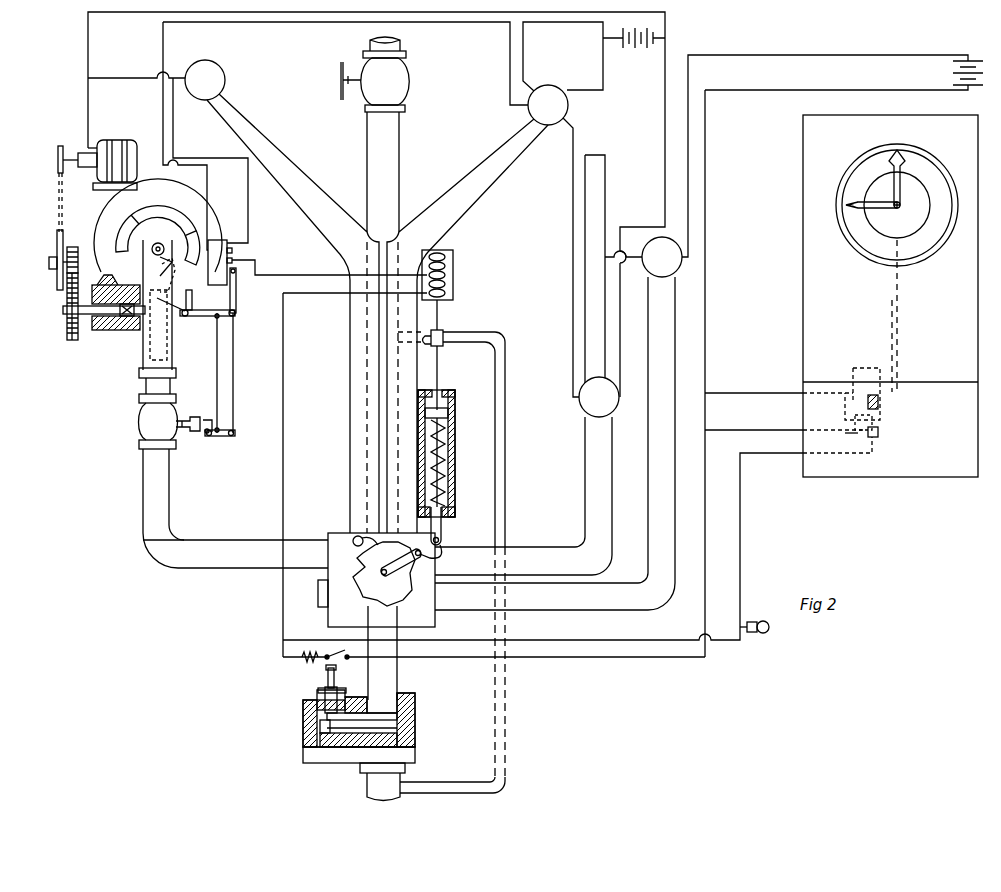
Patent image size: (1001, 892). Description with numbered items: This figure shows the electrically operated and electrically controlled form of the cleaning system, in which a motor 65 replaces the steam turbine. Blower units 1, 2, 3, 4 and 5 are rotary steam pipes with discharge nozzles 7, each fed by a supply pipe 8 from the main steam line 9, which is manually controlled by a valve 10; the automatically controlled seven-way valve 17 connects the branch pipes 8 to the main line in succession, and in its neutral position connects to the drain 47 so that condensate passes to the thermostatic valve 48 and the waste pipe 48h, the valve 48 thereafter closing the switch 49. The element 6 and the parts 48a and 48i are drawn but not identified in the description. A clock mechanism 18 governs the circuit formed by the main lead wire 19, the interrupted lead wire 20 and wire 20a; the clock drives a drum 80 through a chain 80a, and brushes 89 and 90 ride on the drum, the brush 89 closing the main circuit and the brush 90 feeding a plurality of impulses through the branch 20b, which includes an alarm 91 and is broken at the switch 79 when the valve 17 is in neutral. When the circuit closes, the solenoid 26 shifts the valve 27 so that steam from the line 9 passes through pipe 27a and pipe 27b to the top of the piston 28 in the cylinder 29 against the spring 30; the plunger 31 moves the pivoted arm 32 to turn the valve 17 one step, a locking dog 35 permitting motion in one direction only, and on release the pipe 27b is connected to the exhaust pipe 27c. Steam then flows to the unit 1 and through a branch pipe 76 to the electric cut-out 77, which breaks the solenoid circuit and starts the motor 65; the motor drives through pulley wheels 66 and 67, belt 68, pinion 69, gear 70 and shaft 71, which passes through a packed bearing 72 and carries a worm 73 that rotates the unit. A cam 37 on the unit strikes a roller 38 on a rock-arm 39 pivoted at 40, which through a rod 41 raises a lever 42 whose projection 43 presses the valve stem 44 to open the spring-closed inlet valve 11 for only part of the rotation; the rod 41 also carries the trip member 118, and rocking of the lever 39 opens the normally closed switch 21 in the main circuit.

The blower unit 1 is at (140, 252).
The blower unit 2 is at (226, 83).
The blower unit 3 is at (569, 104).
The blower unit 4 is at (603, 382).
The blower unit 5 is at (644, 249).
The contact arm hub 6 is at (166, 250).
The discharge nozzles 7 is at (170, 284).
The cleaning fluid supply pipe 8 is at (312, 193).
The main steam line 9 is at (400, 142).
The valve 10 is at (408, 81).
The inlet valve 11 is at (146, 425).
The seven-way valve 17 is at (356, 540).
The clock mechanism 18 is at (970, 305).
The main lead wire 19 is at (897, 53).
The interrupted lead wire 20 is at (738, 92).
The main operating circuit wire 20a is at (746, 430).
The branch circuit 20b is at (766, 458).
The normally closed switch 21 is at (233, 261).
The solenoid member 26 is at (453, 284).
The valve 27 is at (446, 336).
The pipe 27a is at (438, 356).
The pipe 27b is at (440, 377).
The exhaust pipe 27c is at (506, 402).
The piston 28 is at (449, 414).
The cylinder 29 is at (454, 478).
The spring 30 is at (446, 494).
The plunger 31 is at (440, 433).
The arm 32 is at (448, 557).
The locking dog 35 is at (355, 535).
The cam 37 is at (192, 230).
The roller 38 is at (150, 292).
The rock-arm 39 is at (235, 322).
The pivot 40 is at (190, 318).
The rod 41 is at (236, 370).
The lever 42 is at (232, 438).
The projection 43 is at (214, 428).
The valve stem 44 is at (200, 422).
The drain pipe 47 is at (398, 677).
The thermostatic valve 48 is at (376, 722).
The valve bolt 48a is at (338, 685).
The waste pipe 48h is at (400, 786).
The valve rod 48i is at (318, 731).
The switch 49 is at (312, 665).
The motor 65 is at (134, 158).
The pulley wheel 66 is at (57, 156).
The pulley wheel 67 is at (56, 246).
The belt 68 is at (58, 201).
The pinion 69 is at (80, 250).
The gear 70 is at (67, 305).
The shaft 71 is at (112, 325).
The packed bearing 72 is at (122, 328).
The worm 73 is at (176, 347).
The branch pipe 76 is at (220, 358).
The electric cut-out 77 is at (262, 271).
The switch 79 is at (388, 605).
The drum 80 is at (855, 368).
The chain 80a is at (900, 327).
The brush 89 is at (900, 196).
The brush 90 is at (880, 433).
The alarm 91 is at (768, 633).
The trip member 118 is at (237, 295).